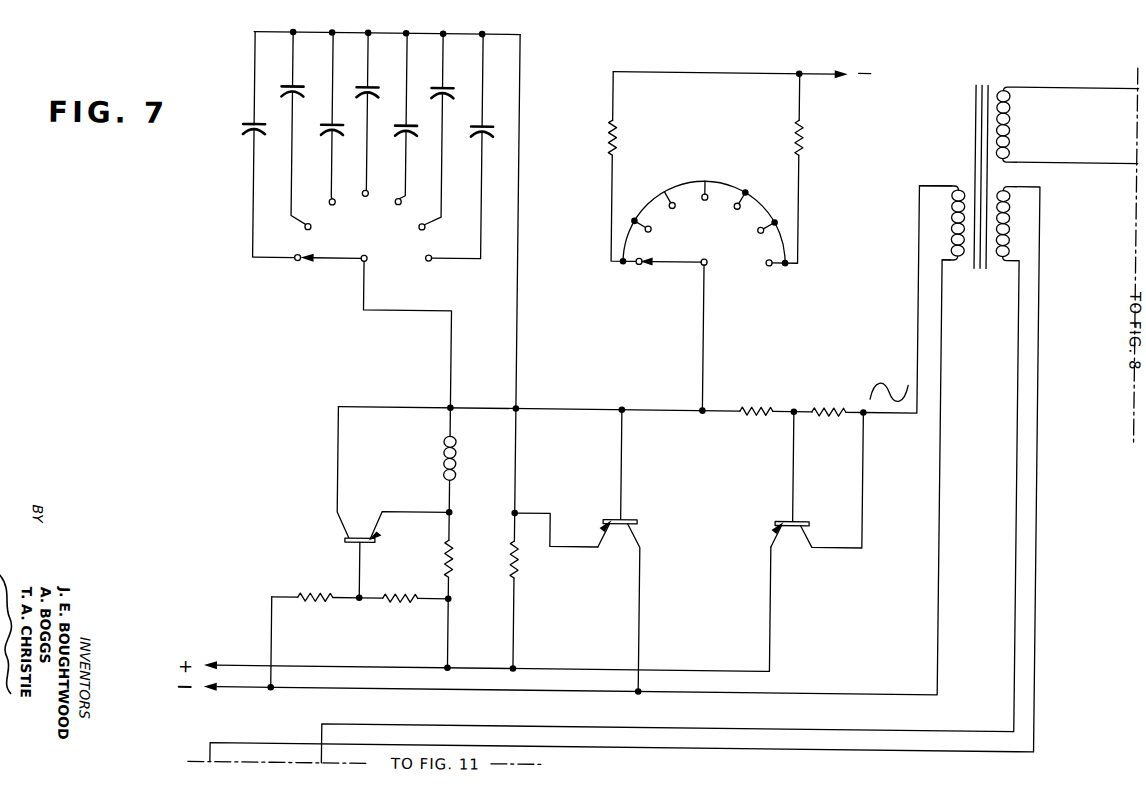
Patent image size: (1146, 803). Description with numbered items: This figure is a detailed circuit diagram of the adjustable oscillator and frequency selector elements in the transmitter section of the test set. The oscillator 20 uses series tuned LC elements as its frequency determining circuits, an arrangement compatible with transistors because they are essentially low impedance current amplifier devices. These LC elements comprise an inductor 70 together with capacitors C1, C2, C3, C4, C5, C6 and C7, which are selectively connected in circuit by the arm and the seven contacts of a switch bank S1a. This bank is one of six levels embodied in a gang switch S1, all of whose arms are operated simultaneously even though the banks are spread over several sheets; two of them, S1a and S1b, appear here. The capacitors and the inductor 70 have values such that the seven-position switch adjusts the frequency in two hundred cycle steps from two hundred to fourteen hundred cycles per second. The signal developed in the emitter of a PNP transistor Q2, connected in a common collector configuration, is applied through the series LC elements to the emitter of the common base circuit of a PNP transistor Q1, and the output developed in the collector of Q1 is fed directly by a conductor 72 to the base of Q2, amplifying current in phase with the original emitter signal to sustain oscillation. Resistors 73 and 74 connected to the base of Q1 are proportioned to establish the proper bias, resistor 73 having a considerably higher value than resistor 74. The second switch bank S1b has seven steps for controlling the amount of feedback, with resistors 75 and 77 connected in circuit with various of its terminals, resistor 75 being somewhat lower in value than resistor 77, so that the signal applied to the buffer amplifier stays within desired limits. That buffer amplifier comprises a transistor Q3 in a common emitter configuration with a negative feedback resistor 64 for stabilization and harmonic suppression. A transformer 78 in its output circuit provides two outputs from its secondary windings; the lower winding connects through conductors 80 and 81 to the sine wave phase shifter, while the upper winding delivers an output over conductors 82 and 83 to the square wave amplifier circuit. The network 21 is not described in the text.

The oscillator 20 is at (394, 23).
The resistor network 21 is at (717, 58).
The negative feedback resistor 64 is at (830, 405).
The inductor 70 is at (459, 461).
The conductor 72 is at (338, 411).
The resistor 73 is at (318, 606).
The resistor 74 is at (403, 606).
The resistor 75 is at (616, 137).
The resistor 77 is at (789, 136).
The transformer 78 is at (992, 67).
The conductor 80 is at (1017, 298).
The conductor 81 is at (1038, 297).
The conductor 82 is at (1087, 90).
The conductor 83 is at (1087, 152).
The capacitor C1 is at (262, 136).
The capacitor C2 is at (280, 96).
The capacitor C3 is at (340, 136).
The capacitor C4 is at (355, 96).
The capacitor C5 is at (414, 136).
The capacitor C6 is at (430, 96).
The capacitor C7 is at (489, 136).
The PNP transistor Q1 is at (340, 538).
The PNP transistor Q2 is at (643, 531).
The transistor Q3 is at (773, 531).
The gang switch S1 is at (331, 292).
The switch bank S1a is at (364, 229).
The switch bank S1b is at (705, 233).